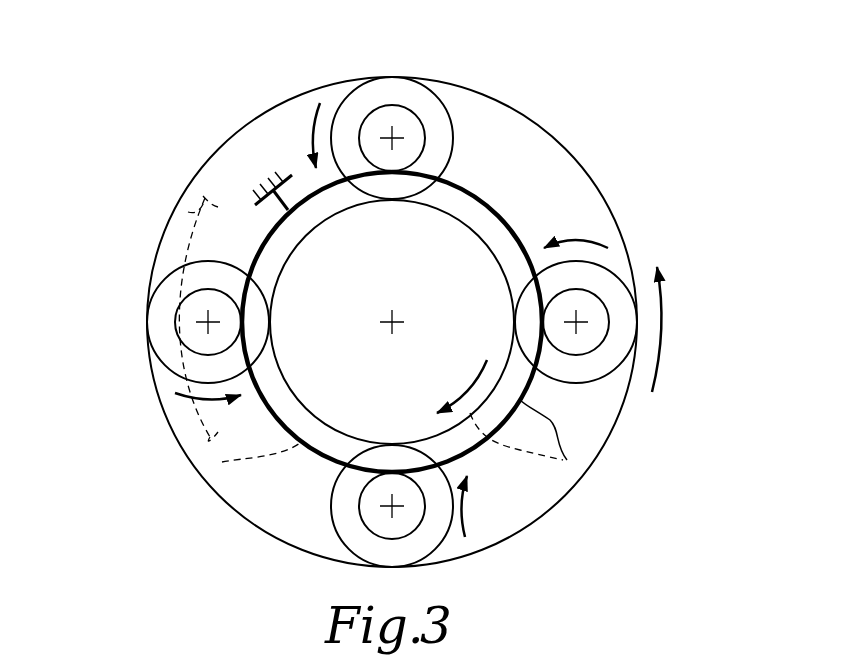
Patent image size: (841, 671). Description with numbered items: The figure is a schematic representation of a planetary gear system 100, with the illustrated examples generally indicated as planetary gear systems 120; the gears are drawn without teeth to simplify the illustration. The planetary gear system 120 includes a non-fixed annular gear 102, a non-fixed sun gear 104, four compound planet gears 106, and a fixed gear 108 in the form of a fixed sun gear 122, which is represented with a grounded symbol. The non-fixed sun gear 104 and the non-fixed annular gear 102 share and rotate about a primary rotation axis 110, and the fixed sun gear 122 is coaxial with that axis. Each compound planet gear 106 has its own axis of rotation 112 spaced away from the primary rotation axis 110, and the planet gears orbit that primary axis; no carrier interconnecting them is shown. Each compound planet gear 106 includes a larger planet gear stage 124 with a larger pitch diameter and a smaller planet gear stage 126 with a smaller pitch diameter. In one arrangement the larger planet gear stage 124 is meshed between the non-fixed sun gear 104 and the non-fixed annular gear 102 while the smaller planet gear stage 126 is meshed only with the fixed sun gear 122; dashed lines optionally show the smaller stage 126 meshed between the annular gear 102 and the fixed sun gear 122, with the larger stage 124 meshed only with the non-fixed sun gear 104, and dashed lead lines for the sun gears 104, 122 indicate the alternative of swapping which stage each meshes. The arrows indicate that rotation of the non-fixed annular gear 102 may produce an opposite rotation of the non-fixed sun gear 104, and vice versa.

The planetary gear system 100 is at (140, 41).
The non-fixed annular gear 102 is at (545, 127).
The non-fixed sun gear 104 is at (283, 403).
The compound planet gear 106 is at (454, 112).
The fixed gear 108 is at (483, 452).
The primary rotation axis 110 is at (396, 321).
The axis of rotation 112 is at (394, 136).
The planetary gear system 120 is at (163, 88).
The fixed sun gear 122 is at (567, 460).
The larger planet gear stage 124 is at (455, 141).
The smaller planet gear stage 126 is at (362, 113).